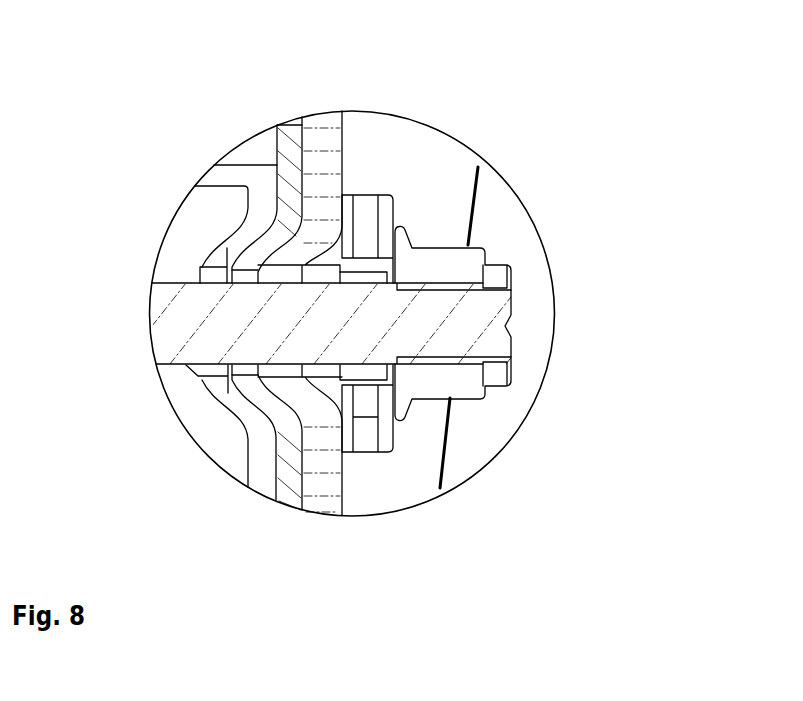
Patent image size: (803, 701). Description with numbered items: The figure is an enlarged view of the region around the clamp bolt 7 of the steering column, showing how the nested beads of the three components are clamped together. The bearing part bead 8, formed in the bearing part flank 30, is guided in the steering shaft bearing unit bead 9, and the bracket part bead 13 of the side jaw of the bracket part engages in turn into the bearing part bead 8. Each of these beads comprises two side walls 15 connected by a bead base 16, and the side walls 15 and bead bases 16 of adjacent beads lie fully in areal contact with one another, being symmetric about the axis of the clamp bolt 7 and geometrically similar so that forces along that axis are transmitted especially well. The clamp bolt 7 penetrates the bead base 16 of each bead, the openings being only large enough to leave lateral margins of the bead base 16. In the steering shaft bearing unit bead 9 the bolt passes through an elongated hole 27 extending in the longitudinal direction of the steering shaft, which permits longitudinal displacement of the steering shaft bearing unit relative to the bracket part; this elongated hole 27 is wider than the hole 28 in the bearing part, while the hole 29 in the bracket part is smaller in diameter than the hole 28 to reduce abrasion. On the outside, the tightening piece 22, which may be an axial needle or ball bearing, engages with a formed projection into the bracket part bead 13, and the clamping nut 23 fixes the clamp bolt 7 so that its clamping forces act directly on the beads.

The clamp bolt 7 is at (478, 167).
The bearing part bead 8 is at (230, 410).
The steering shaft bearing unit bead 9 is at (200, 393).
The bracket part bead 13 is at (380, 450).
The side walls 15 is at (285, 158).
The bead base 16 is at (253, 277).
The tightening piece 22 is at (375, 193).
The clamping nut 23 is at (457, 273).
The elongated hole 27 is at (178, 282).
The hole 28 is at (233, 281).
The hole 29 is at (280, 283).
The bearing part flanks 30 is at (303, 115).